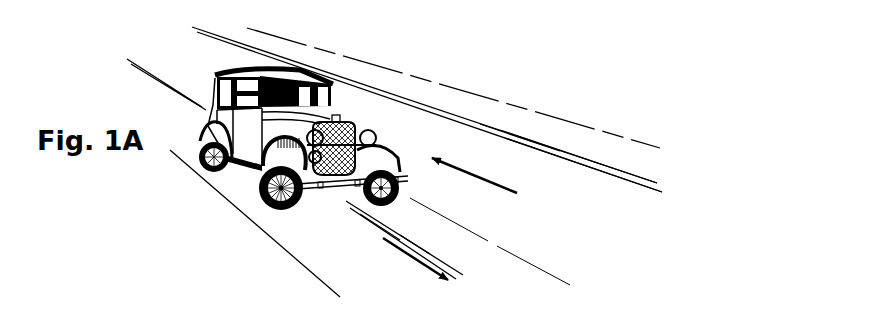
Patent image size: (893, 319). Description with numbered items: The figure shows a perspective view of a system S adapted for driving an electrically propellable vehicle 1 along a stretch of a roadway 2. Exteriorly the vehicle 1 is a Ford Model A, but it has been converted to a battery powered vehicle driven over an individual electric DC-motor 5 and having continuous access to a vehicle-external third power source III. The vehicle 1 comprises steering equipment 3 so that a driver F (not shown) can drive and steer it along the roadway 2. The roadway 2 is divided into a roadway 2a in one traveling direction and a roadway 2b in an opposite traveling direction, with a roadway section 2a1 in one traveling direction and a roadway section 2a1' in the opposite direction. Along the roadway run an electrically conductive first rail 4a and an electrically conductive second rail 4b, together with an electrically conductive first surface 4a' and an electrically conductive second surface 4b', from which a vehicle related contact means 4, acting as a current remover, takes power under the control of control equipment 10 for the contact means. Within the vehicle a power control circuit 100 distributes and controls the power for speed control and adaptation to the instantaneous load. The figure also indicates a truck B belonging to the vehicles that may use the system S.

The vehicle 1 is at (212, 92).
The driver F is at (303, 95).
The steering equipment 3 is at (340, 97).
The DC-motor 5 is at (353, 115).
The stretch of a roadway 2 is at (335, 231).
The roadway in one traveling direction 2a is at (305, 183).
The roadway in an opposite traveling direction 2b is at (233, 42).
The roadway section in one traveling direction 2a1 is at (415, 265).
The roadway section in an opposite direction 2a1' is at (550, 119).
The vehicle related contact means 4 is at (325, 198).
The electrical conductive first rail 4a is at (603, 189).
The electrical conductive second rail 4b is at (606, 156).
The electrical conductive first surface 4a' is at (373, 244).
The electrical conductive second surface 4b' is at (437, 247).
The control equipment for contact means 10 is at (232, 172).
The truck B is at (267, 175).
The system S is at (478, 90).
The power control circuit 100 is at (337, 172).
The third power source III is at (458, 267).